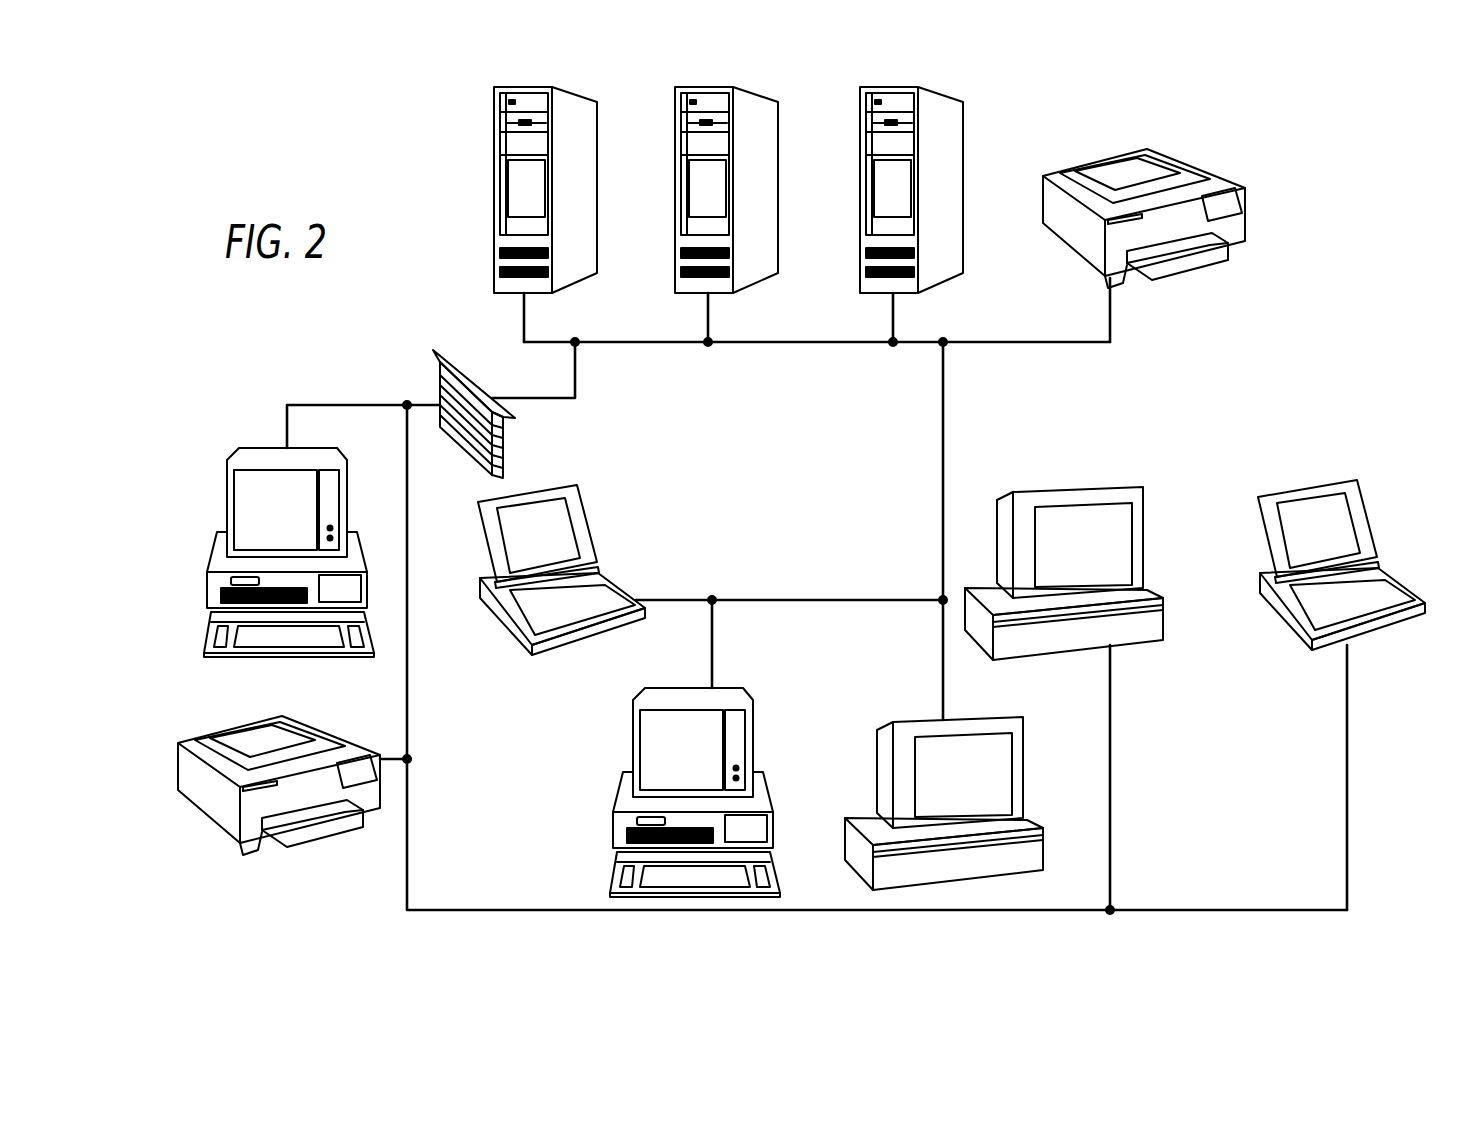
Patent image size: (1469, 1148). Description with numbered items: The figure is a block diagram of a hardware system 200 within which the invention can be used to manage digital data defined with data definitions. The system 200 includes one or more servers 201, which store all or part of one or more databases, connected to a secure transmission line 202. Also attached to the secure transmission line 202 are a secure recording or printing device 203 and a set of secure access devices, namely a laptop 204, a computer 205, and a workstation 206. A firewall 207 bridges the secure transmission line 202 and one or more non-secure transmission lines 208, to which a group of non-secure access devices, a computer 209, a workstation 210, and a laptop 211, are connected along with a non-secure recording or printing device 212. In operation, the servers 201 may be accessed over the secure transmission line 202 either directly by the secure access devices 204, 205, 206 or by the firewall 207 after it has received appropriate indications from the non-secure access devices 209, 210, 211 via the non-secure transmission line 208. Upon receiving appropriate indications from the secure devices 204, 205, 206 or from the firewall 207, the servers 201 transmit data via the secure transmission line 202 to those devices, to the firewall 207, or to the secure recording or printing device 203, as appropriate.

The hardware system 200 is at (1325, 114).
The server 201 is at (597, 112).
The secure transmission line 202 is at (820, 342).
The secure recording or printing device 203 is at (1243, 212).
The laptop 204 is at (522, 644).
The computer 205 is at (772, 805).
The workstation 206 is at (1027, 752).
The firewall 207 is at (503, 448).
The non-secure transmission line 208 is at (410, 713).
The computer 209 is at (226, 525).
The workstation 210 is at (1073, 490).
The laptop 211 is at (1288, 490).
The non-secure recording or printing device 212 is at (230, 727).